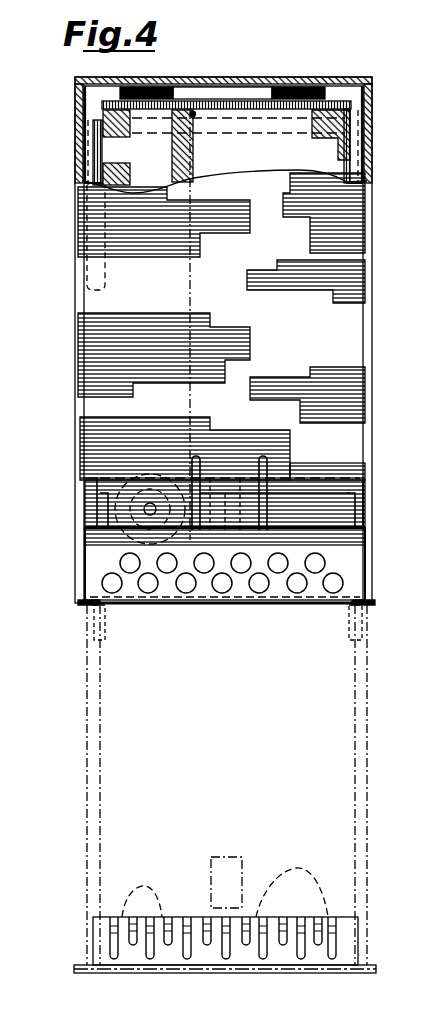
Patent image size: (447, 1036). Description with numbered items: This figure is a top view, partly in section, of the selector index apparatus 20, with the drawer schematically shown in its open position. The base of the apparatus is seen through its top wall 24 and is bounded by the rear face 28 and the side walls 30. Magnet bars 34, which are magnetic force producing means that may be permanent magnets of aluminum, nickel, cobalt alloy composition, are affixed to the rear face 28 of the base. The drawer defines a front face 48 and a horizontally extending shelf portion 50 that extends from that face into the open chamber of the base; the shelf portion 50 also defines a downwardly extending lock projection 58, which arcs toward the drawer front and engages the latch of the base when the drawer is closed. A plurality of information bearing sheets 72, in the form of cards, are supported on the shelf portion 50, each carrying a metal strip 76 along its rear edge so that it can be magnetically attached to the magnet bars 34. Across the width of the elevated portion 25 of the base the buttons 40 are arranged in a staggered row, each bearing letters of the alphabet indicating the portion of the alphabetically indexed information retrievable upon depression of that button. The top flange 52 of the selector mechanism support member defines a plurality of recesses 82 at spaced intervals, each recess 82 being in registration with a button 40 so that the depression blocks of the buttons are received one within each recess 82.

The selector index apparatus 20 is at (371, 68).
The top wall 24 is at (110, 366).
The elevated portion 25 is at (113, 567).
The rear face 28 is at (302, 82).
The side walls 30 is at (373, 113).
The magnet bars 34 is at (152, 112).
The buttons 40 is at (218, 592).
The front face 48 is at (78, 604).
The shelf portion 50 is at (78, 136).
The top flange 52 is at (100, 950).
The lock projection 58 is at (220, 857).
The information bearing sheets 72 is at (230, 158).
The metal strip 76 is at (208, 100).
The recesses 82 is at (225, 888).